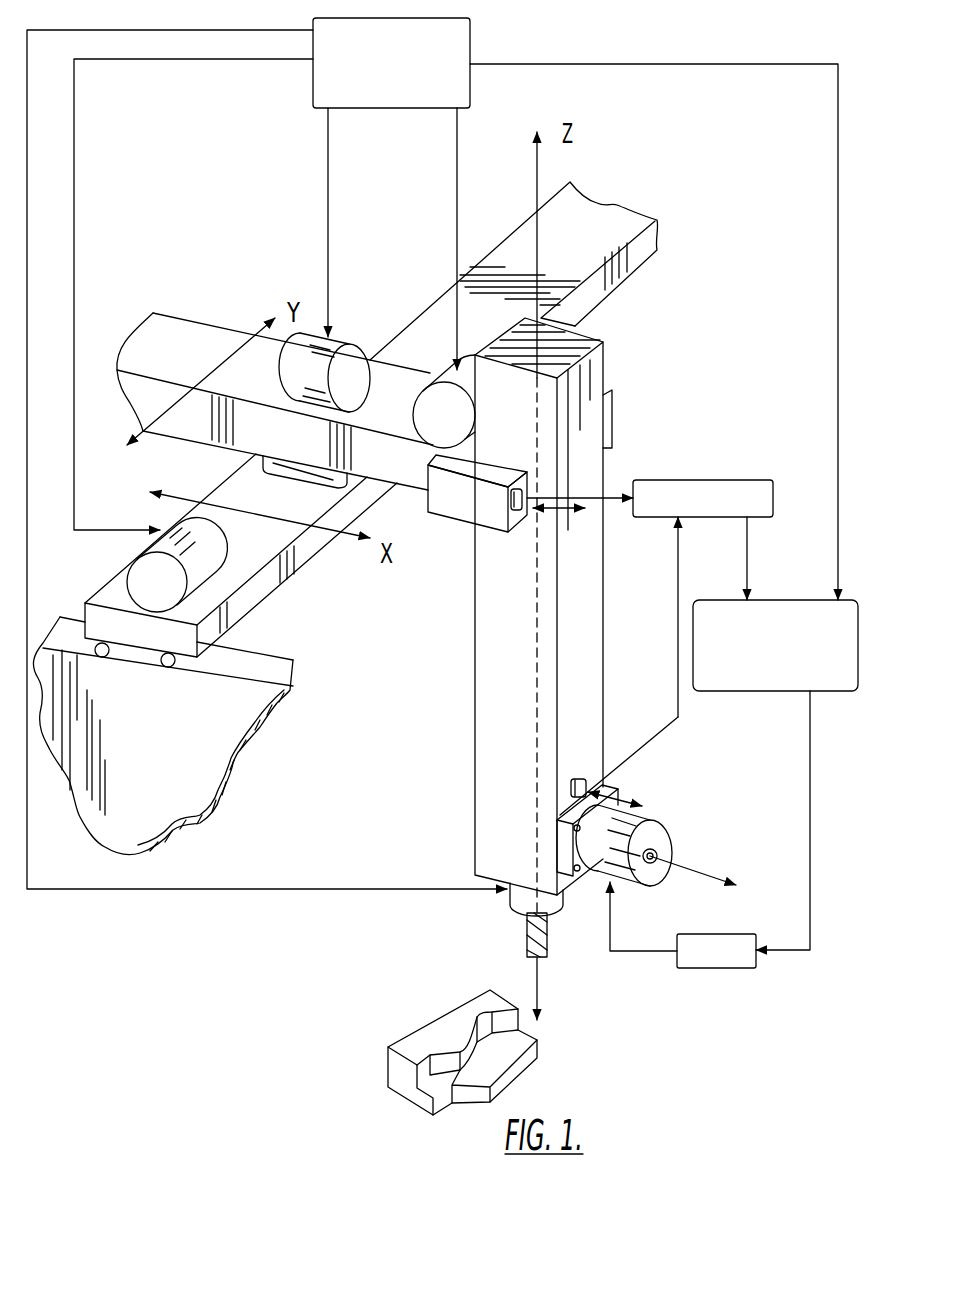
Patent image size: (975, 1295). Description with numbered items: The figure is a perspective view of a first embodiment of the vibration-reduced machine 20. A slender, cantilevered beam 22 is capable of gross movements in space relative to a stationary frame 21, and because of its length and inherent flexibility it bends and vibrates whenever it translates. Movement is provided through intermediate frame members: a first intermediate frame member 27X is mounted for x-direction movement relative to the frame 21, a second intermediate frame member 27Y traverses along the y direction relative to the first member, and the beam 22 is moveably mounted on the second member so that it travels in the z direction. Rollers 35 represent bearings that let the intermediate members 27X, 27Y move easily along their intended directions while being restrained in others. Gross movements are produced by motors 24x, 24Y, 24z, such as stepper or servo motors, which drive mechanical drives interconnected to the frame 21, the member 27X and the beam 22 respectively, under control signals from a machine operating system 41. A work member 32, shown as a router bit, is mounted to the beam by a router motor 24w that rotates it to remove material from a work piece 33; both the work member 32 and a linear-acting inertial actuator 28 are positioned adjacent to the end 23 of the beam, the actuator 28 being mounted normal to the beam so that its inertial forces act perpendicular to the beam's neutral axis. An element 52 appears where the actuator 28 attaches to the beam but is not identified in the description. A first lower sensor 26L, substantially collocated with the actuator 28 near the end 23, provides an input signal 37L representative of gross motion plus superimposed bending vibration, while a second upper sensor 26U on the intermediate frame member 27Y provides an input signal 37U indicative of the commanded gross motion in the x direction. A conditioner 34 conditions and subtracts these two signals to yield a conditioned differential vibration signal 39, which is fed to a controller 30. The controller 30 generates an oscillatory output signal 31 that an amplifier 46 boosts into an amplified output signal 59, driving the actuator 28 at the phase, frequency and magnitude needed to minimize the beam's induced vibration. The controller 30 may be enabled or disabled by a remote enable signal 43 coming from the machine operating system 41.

The vibration-reduced machine 20 is at (410, 767).
The stationary frame 21 is at (137, 747).
The beam 22 is at (495, 618).
The end portion of the beam 23 is at (540, 850).
The motor 24x is at (143, 573).
The motor 24Y is at (340, 345).
The motor 24z is at (442, 412).
The router motor 24w is at (520, 896).
The second upper sensor 26U is at (505, 498).
The first lower sensor 26L is at (578, 780).
The first intermediate frame member 27X is at (587, 247).
The second intermediate frame member 27Y is at (190, 374).
The linear-acting inertial actuator 28 is at (648, 815).
The controller 30 is at (831, 691).
The oscillatory output signal 31 is at (813, 797).
The work member 32 is at (548, 932).
The work piece 33 is at (397, 1063).
The conditioner 34 is at (737, 480).
The rollers 35 is at (287, 470).
The input signal 37U is at (583, 493).
The input signal 37L is at (678, 718).
The conditioned signal 39 is at (747, 552).
The machine operating system 41 is at (377, 110).
The remote enable signal 43 is at (838, 207).
The amplifier 46 is at (732, 968).
The motor mount 52 is at (615, 787).
The amplified output signal 59 is at (617, 951).